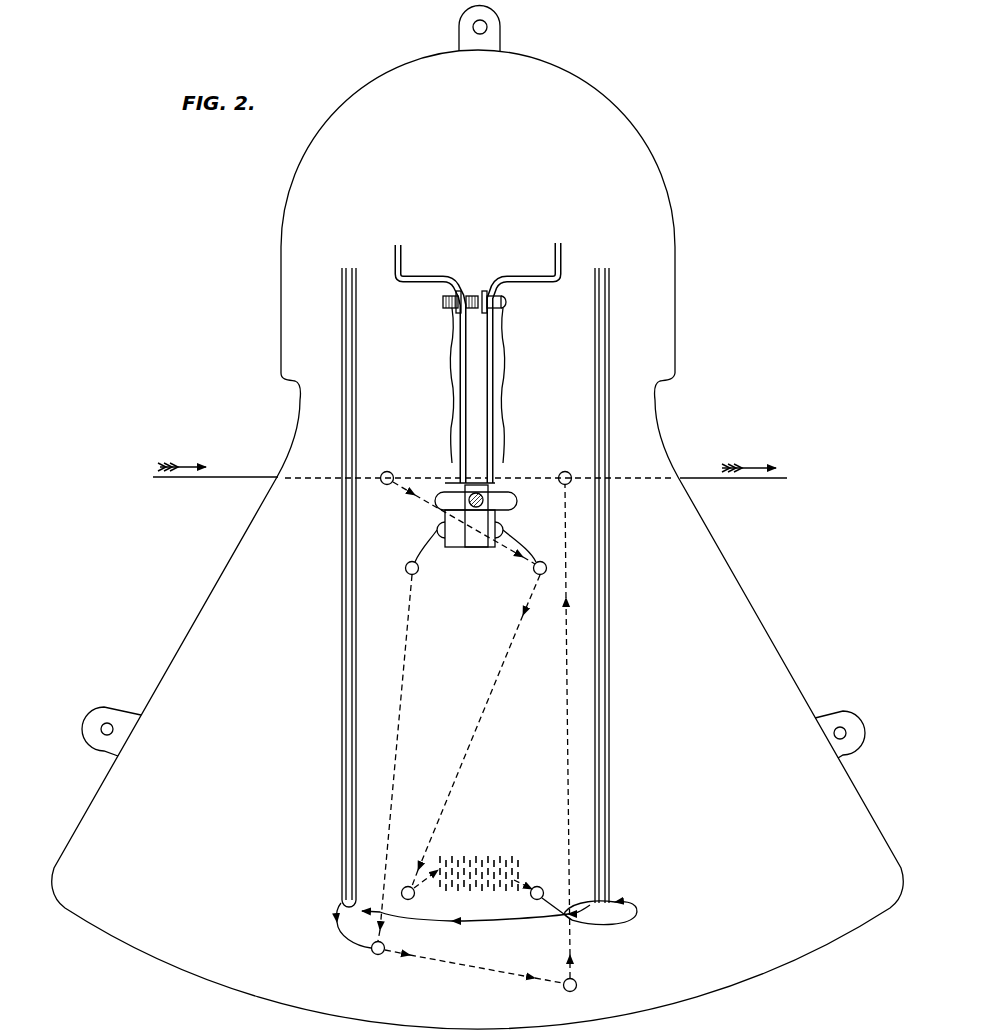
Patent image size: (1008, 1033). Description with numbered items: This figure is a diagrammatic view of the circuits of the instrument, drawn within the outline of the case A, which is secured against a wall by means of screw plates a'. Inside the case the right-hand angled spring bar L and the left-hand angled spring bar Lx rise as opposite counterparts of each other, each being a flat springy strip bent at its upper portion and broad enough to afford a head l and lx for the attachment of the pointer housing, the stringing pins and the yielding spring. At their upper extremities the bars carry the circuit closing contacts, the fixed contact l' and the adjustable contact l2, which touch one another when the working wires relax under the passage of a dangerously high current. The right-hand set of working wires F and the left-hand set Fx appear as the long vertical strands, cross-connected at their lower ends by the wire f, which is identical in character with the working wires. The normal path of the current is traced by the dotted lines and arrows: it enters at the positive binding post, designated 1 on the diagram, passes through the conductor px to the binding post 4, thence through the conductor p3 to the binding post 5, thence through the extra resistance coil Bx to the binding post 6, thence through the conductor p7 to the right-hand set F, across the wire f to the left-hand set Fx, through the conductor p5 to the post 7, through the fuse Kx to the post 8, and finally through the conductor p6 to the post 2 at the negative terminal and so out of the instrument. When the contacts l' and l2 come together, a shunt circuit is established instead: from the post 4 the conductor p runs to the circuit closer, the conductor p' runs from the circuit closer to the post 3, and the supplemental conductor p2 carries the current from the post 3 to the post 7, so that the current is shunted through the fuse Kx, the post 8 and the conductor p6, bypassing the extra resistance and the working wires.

The case A is at (686, 293).
The screw plates a' is at (473, 381).
The left hand set of working wires Fx is at (341, 785).
The right hand set of working wires F is at (611, 785).
The left-hand angled spring bar Lx is at (430, 364).
The right-hand angled spring bar L is at (524, 363).
The head of left-hand spring bar lx is at (394, 262).
The head of right-hand spring bar l is at (574, 255).
The adjustable circuit closing contact l2 is at (442, 303).
The fixed circuit closing contact l' is at (506, 304).
The conductor p' is at (426, 435).
The conductor p is at (524, 435).
The conductor px is at (515, 554).
The supplemental conductor p2 is at (394, 740).
The conductor p3 is at (484, 703).
The conductor p5 is at (340, 927).
The conductor p6 is at (566, 786).
The loop conductor at right rod p7 is at (617, 925).
The wire connection f is at (487, 925).
The fuse Kx is at (496, 972).
The extra resistance coil Bx is at (477, 856).
The positive binding post 1 is at (385, 468).
The circuit point 2 is at (569, 468).
The post 3 is at (401, 580).
The binding post 4 is at (549, 581).
The binding post 5 is at (403, 882).
The binding post 6 is at (544, 880).
The post 7 is at (379, 961).
The post 8 is at (577, 985).